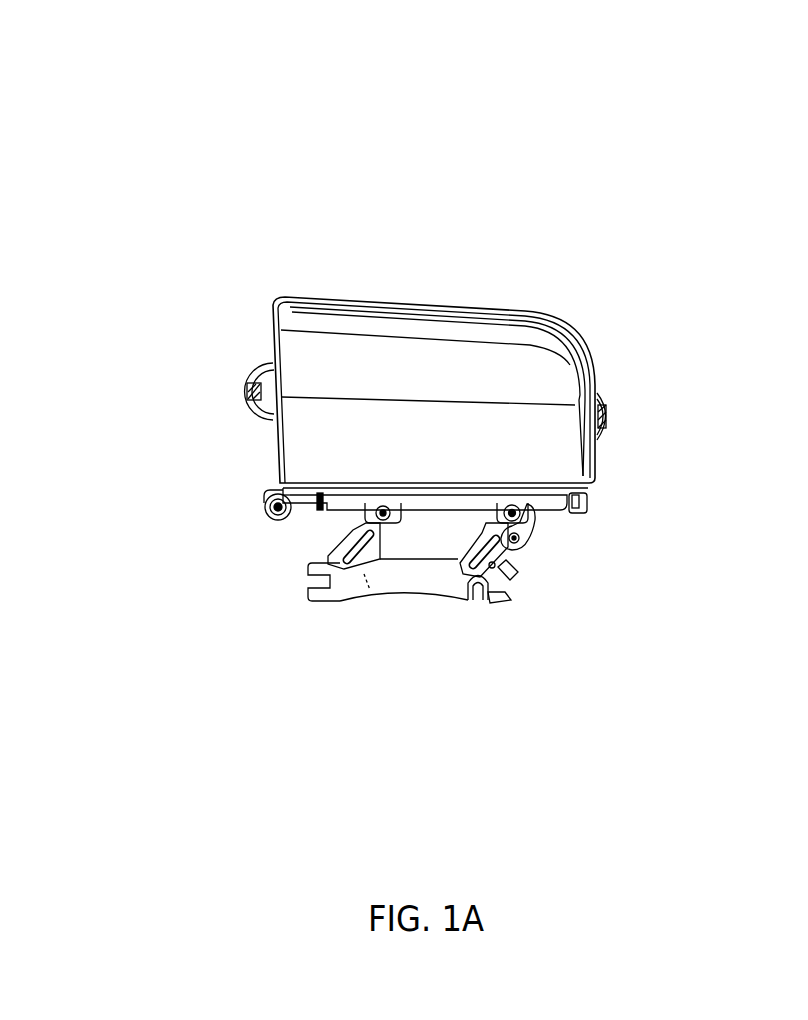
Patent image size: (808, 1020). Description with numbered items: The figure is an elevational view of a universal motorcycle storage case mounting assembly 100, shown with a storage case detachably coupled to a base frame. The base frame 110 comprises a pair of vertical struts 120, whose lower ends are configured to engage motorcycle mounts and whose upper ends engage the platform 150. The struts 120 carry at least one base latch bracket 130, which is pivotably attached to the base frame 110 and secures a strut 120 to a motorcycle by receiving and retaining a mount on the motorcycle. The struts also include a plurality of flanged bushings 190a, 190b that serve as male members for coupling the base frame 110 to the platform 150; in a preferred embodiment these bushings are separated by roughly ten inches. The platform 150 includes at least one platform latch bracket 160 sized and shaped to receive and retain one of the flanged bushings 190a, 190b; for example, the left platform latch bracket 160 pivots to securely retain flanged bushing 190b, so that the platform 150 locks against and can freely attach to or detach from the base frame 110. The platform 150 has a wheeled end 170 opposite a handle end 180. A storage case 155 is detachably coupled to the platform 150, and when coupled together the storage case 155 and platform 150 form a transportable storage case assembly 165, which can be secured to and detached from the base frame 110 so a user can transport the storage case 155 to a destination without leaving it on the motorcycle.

The universal motorcycle storage case mounting assembly 100 is at (444, 94).
The base frame 110 is at (423, 577).
The vertical struts 120 is at (361, 563).
The base latch bracket 130 is at (480, 595).
The platform 150 is at (424, 505).
The storage case 155 is at (510, 362).
The platform latch bracket 160 is at (530, 537).
The transportable storage case assembly 165 is at (662, 302).
The wheeled end 170 is at (254, 490).
The handle end 180 is at (596, 502).
The flanged bushing 190a is at (372, 517).
The flanged bushing 190b is at (505, 511).